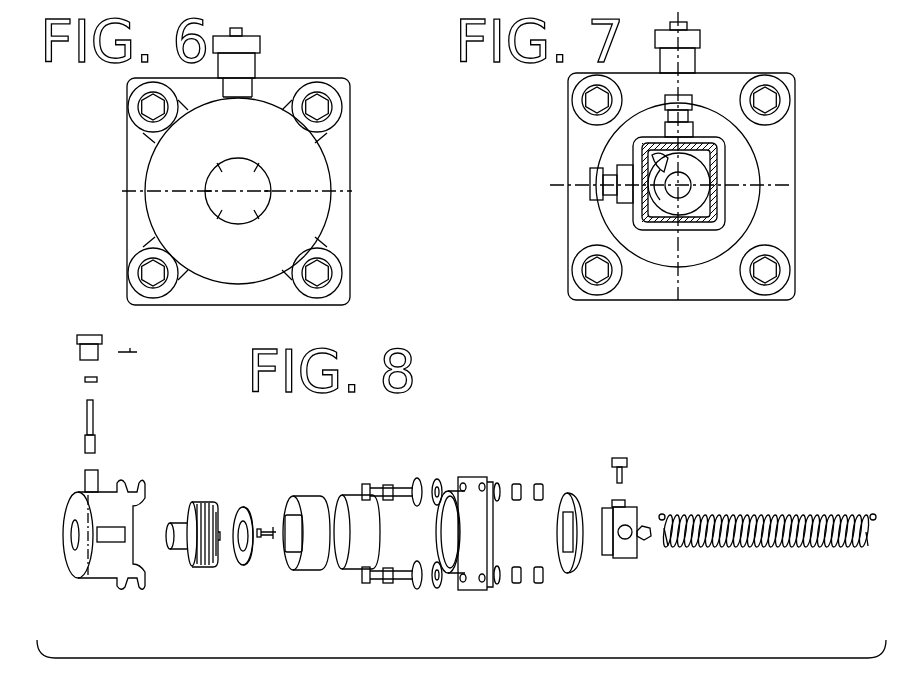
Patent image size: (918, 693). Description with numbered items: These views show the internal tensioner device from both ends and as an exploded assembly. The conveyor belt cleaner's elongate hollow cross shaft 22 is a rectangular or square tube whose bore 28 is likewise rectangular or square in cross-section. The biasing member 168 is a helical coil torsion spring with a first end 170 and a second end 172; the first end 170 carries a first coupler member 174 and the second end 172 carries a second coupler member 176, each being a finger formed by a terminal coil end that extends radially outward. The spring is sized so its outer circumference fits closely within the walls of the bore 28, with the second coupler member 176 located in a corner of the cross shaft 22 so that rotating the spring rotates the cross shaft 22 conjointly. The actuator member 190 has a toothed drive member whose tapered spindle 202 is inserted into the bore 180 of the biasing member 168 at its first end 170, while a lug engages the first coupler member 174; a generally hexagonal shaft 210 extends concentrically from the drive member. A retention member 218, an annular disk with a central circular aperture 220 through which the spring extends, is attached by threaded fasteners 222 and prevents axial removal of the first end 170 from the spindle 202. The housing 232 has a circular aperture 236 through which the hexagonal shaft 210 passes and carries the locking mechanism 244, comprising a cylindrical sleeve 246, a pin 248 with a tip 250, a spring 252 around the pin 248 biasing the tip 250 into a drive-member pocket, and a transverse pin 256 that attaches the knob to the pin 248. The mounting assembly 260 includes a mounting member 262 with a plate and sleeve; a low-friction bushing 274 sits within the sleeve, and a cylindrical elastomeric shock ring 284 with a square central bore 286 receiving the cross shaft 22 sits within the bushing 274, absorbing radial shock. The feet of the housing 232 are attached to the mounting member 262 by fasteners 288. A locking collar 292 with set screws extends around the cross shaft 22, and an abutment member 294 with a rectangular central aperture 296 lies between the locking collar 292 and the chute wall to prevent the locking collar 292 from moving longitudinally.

In FIG. 7, the cross shaft 22 is at (717, 160).
In FIG. 7, the bore 28 is at (700, 213).
In FIG. 8, the biasing member 168 is at (750, 515).
In FIG. 8, the first end 170 is at (665, 548).
In FIG. 8, the second end 172 is at (870, 548).
In FIG. 8, the first coupler member 174 is at (663, 513).
In FIG. 7, the second coupler member 176 is at (657, 160).
In FIG. 8, the second coupler member 176 is at (873, 515).
In FIG. 7, the bore 180 is at (663, 200).
In FIG. 8, the actuator member 190 is at (203, 493).
In FIG. 8, the spindle 202 is at (218, 537).
In FIG. 6, the hexagonal shaft 210 is at (260, 200).
In FIG. 8, the hexagonal shaft 210 is at (177, 549).
In FIG. 8, the retention member 218 is at (243, 510).
In FIG. 8, the central circular aperture 220 is at (268, 540).
In FIG. 8, the threaded fasteners 222 is at (250, 550).
In FIG. 6, the housing 232 is at (313, 219).
In FIG. 8, the housing 232 is at (70, 573).
In FIG. 8, the circular aperture 236 is at (78, 540).
In FIG. 6, the locking mechanism 244 is at (257, 60).
In FIG. 7, the locking mechanism 244 is at (700, 60).
In FIG. 8, the cylindrical sleeve 246 is at (102, 483).
In FIG. 8, the pin 248 is at (95, 417).
In FIG. 8, the tip 250 is at (97, 457).
In FIG. 8, the spring 252 is at (97, 380).
In FIG. 8, the transverse pin 256 is at (130, 348).
In FIG. 8, the mounting assembly 260 is at (452, 413).
In FIG. 6, the mounting member 262 is at (332, 150).
In FIG. 8, the mounting member 262 is at (470, 480).
In FIG. 8, the bushing 274 is at (367, 535).
In FIG. 8, the shock ring 284 is at (313, 503).
In FIG. 8, the central bore 286 is at (300, 547).
In FIG. 8, the fasteners 288 is at (403, 490).
In FIG. 7, the locking collar 292 is at (723, 197).
In FIG. 8, the locking collar 292 is at (627, 557).
In FIG. 7, the abutment member 294 is at (738, 223).
In FIG. 8, the abutment member 294 is at (570, 493).
In FIG. 8, the central aperture 296 is at (570, 560).